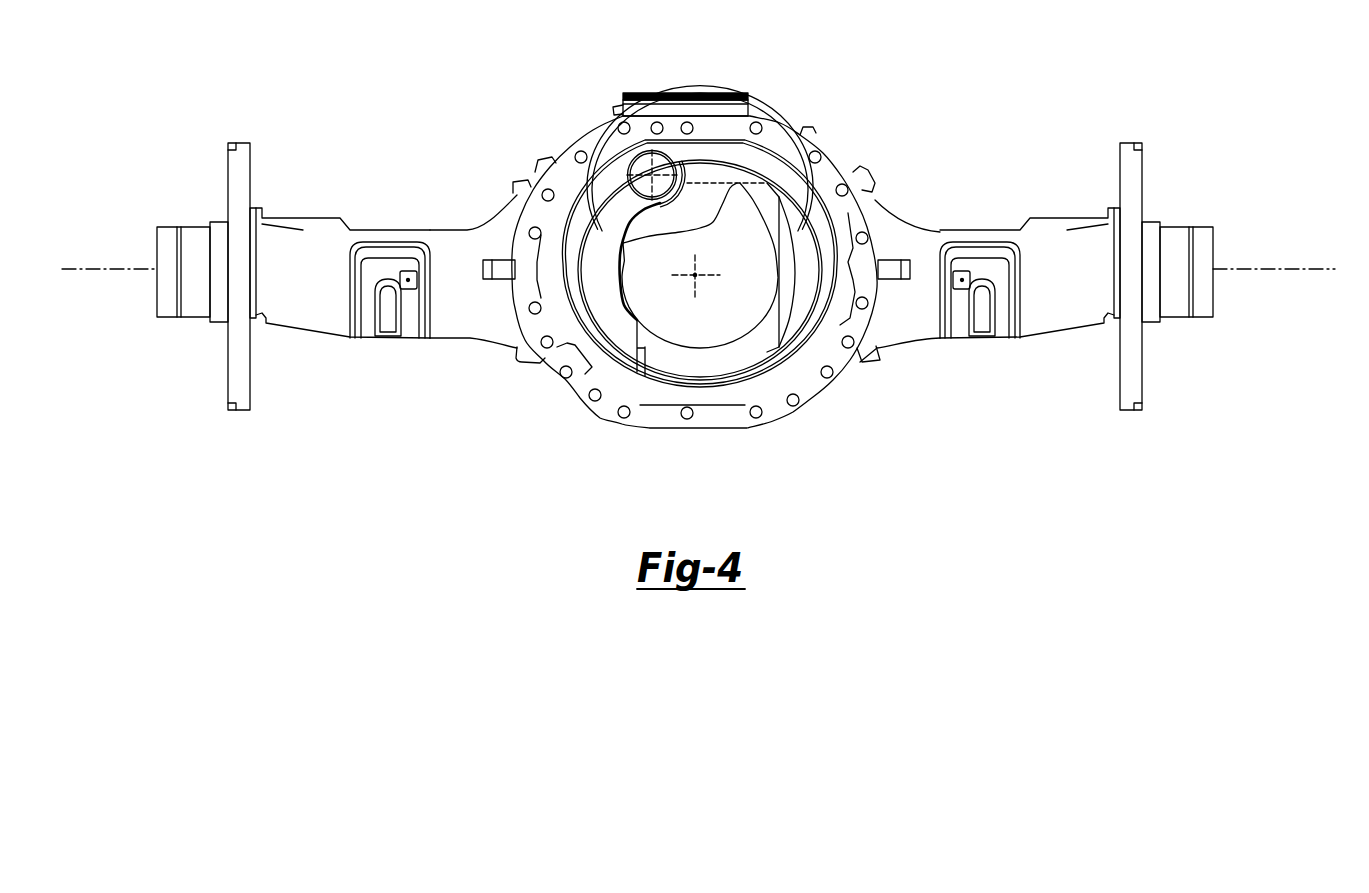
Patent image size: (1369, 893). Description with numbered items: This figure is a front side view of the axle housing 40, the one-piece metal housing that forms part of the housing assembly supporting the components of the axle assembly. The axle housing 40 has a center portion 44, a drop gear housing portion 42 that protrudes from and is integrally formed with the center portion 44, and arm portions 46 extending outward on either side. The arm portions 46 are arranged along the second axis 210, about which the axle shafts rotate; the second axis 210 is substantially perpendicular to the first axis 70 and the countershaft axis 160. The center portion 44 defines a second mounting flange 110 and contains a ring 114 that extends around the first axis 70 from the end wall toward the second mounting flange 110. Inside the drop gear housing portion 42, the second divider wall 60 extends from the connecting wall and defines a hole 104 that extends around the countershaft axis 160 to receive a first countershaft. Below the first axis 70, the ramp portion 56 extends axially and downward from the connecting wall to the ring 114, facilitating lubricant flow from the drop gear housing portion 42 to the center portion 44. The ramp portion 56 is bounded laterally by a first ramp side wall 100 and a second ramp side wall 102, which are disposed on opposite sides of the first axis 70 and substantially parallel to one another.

The axle housing 40 is at (895, 123).
The drop gear housing portion 42 is at (580, 129).
The center portion 44 is at (588, 400).
The arm portion 46 is at (358, 229).
The ramp portion 56 is at (709, 377).
The second divider wall 60 is at (700, 228).
The first axis 70 is at (695, 276).
The first ramp side wall 100 is at (643, 348).
The second ramp side wall 102 is at (778, 323).
The hole 104 is at (640, 192).
The second mounting flange 110 is at (650, 410).
The ring 114 is at (727, 392).
The countershaft axis 160 is at (654, 172).
The second axis 210 is at (1282, 268).